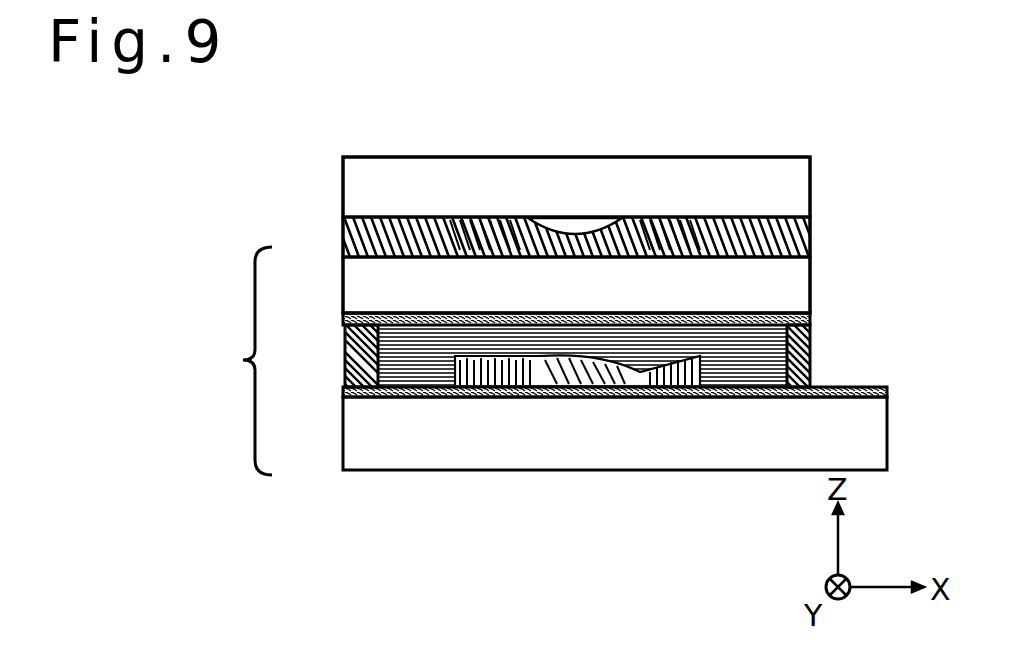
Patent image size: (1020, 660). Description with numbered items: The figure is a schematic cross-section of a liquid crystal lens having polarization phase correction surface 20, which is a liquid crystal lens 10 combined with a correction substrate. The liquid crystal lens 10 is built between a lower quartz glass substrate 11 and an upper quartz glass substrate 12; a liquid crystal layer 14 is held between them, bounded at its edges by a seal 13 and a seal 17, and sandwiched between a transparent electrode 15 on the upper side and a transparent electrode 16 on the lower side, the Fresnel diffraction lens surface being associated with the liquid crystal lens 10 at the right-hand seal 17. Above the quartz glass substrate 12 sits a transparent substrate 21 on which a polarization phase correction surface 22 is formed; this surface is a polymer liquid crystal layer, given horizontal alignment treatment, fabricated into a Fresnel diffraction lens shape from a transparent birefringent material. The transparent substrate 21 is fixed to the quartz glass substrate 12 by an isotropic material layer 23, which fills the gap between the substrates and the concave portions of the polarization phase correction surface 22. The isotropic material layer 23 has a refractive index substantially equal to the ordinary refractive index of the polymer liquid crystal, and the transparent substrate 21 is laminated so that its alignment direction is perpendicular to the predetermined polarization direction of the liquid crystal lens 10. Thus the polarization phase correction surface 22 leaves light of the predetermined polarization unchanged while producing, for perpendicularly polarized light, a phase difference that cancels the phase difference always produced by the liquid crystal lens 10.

The liquid crystal lens 10 is at (238, 374).
The quartz glass substrate 11 is at (380, 435).
The quartz glass substrate 12 is at (385, 277).
The seal 13 is at (345, 362).
The liquid crystal layer 14 is at (812, 326).
The transparent electrode 15 is at (345, 323).
The transparent electrode 16 is at (345, 391).
The Fresnel diffraction lens surface 17 is at (812, 358).
The liquid crystal lens having polarization phase correction surface 20 is at (338, 126).
The transparent substrate 21 is at (385, 194).
The polarization phase correction surface 22 is at (578, 226).
The isotropic material layer 23 is at (720, 241).